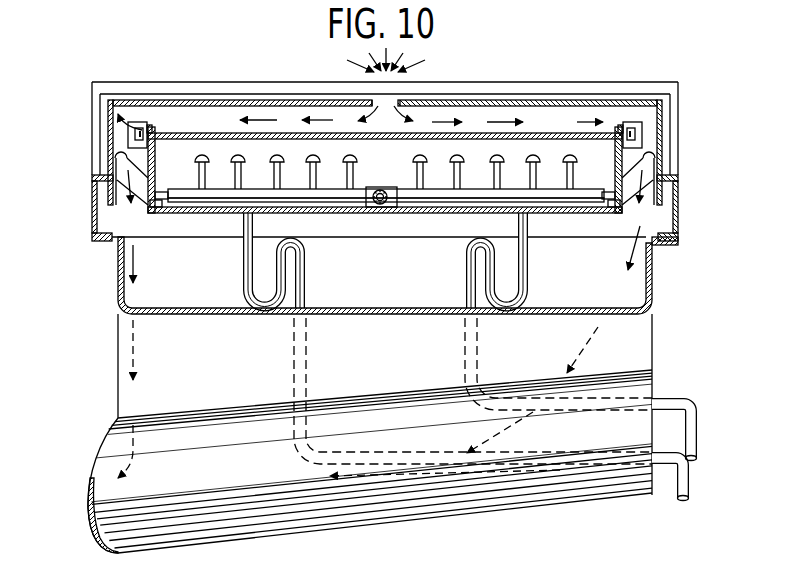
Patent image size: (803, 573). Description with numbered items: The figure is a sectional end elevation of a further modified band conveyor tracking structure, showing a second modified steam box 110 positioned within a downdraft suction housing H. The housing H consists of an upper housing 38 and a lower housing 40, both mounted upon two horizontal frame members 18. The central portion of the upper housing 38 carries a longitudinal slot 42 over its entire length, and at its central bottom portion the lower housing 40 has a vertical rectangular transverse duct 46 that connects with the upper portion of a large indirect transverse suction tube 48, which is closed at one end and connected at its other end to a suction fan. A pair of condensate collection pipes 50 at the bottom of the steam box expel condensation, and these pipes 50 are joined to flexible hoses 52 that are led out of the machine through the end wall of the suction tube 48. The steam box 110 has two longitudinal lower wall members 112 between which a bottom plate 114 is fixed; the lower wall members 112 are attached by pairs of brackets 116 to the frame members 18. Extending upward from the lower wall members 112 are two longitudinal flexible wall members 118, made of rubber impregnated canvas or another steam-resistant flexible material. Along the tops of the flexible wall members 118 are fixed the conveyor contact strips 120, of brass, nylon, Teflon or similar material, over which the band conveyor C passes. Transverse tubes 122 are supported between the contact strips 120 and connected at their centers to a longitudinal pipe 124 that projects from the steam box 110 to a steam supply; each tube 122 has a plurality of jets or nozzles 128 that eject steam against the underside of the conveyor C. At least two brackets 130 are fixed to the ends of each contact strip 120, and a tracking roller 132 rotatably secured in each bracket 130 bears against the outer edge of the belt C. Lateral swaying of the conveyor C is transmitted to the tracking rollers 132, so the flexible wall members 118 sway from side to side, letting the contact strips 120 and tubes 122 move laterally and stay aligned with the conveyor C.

The horizontal frame members 18 is at (92, 206).
The upper housing 38 is at (256, 99).
The lower housing 40 is at (372, 314).
The longitudinal slot 42 is at (398, 99).
The vertical rectangular transverse duct 46 is at (643, 343).
The indirect transverse suction tube 48 is at (397, 512).
The condensate collection pipes 50 is at (243, 262).
The flexible hoses 52 is at (698, 422).
The steam box 110 is at (382, 215).
The longitudinal lower wall members 112 is at (166, 214).
The bottom plate 114 is at (547, 203).
The brackets 116 is at (125, 150).
The flexible wall members 118 is at (156, 176).
The conveyor contact strips 120 is at (150, 142).
The transverse tubes 122 is at (330, 200).
The longitudinal pipe 124 is at (378, 189).
The jets or nozzles 128 is at (274, 181).
The brackets 130 is at (130, 133).
The tracking roller 132 is at (152, 130).
The band conveyor C is at (472, 132).
The downdraft suction housing H is at (90, 250).